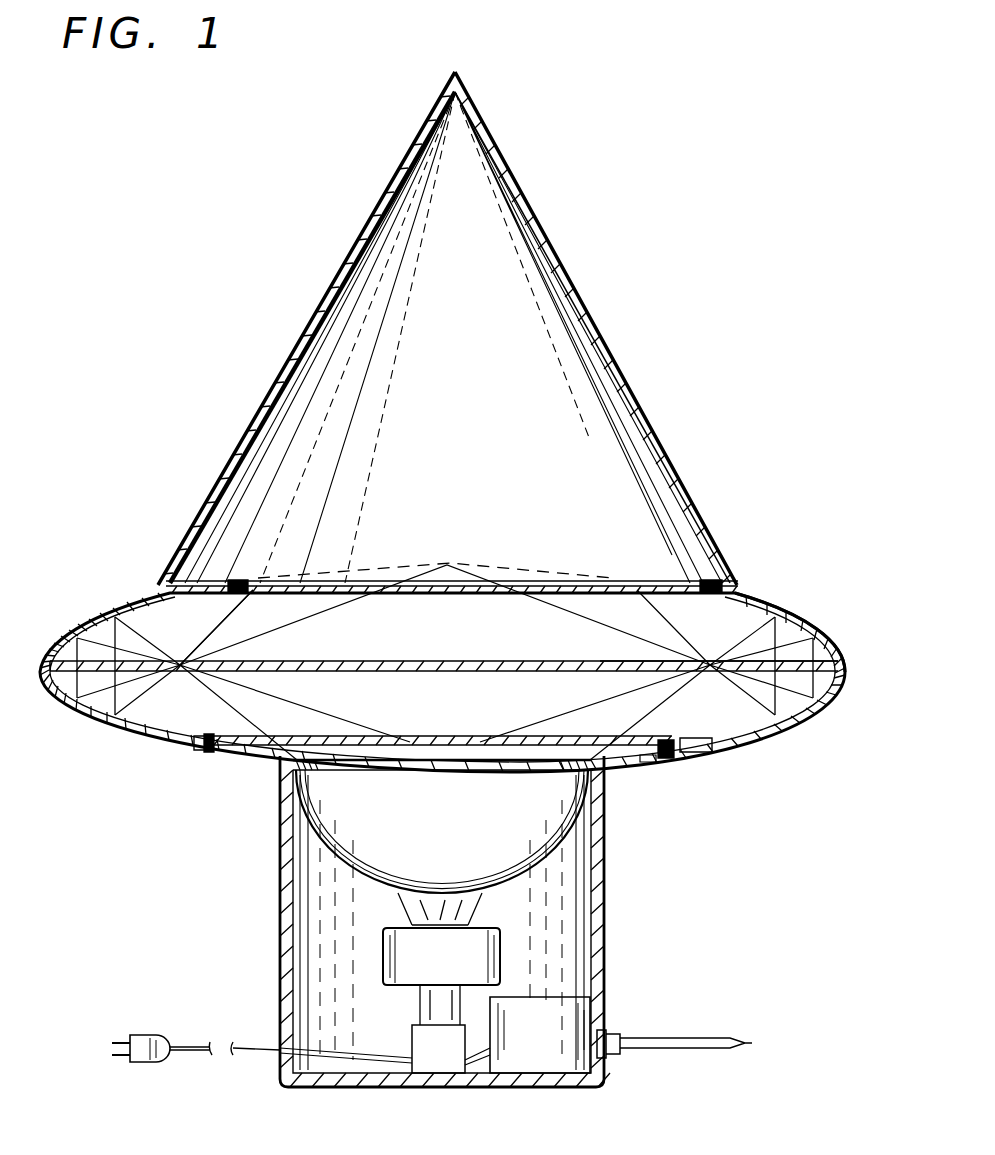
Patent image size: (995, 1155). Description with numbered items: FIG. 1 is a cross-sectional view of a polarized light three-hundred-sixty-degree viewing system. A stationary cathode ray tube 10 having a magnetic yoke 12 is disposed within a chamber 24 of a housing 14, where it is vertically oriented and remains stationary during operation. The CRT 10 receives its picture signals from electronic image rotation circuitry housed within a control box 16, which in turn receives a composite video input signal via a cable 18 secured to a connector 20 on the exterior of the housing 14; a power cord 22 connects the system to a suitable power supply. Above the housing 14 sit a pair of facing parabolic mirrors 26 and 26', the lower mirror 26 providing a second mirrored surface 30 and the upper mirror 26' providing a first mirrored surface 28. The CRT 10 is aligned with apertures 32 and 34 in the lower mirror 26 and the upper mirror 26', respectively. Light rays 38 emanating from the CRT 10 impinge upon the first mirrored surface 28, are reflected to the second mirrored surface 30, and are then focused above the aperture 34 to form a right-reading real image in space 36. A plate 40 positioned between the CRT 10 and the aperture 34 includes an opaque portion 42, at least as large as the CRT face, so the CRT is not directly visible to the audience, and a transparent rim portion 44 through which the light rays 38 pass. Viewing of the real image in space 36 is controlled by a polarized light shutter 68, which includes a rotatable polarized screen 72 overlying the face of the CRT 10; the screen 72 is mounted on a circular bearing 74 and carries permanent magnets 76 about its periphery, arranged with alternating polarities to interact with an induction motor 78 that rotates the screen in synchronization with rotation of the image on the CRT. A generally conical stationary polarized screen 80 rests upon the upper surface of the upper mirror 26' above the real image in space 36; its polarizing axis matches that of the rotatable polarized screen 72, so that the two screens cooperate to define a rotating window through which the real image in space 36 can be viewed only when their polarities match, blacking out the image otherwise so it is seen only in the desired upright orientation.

The cathode ray tube 10 is at (383, 803).
The magnetic yoke 12 is at (385, 955).
The housing 14 is at (282, 900).
The control box 16 is at (520, 1057).
The cable 18 is at (700, 1042).
The connector 20 is at (618, 1036).
The power cord 22 is at (188, 1055).
The chamber 24 is at (570, 958).
The lower parabolic mirror 26 is at (442, 688).
The upper parabolic mirror 26' is at (790, 612).
The first mirrored surface 28 is at (200, 598).
The second mirrored surface 30 is at (152, 752).
The aperture 32 is at (296, 762).
The aperture 34 is at (254, 582).
The real image in space 36 is at (488, 563).
The light rays 38 is at (248, 598).
The plate 40 is at (447, 661).
The opaque portion 42 is at (588, 662).
The transparent rim portion 44 is at (792, 686).
The polarized light shutter 68 is at (298, 322).
The rotatable polarized screen 72 is at (456, 742).
The circular bearing 74 is at (665, 764).
The permanent magnets 76 is at (216, 756).
The induction motor 78 is at (198, 752).
The stationary polarized screen 80 is at (608, 298).